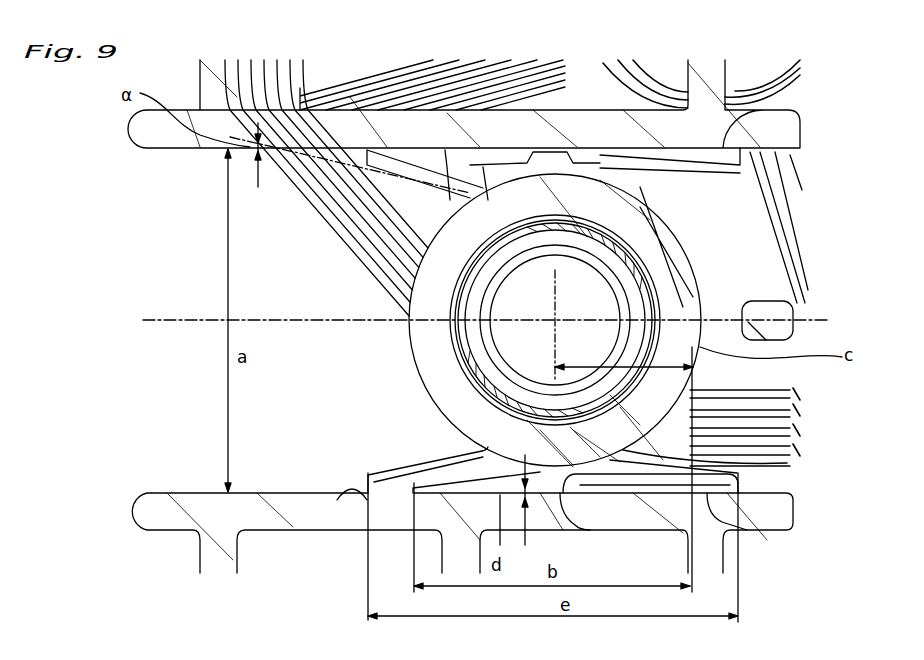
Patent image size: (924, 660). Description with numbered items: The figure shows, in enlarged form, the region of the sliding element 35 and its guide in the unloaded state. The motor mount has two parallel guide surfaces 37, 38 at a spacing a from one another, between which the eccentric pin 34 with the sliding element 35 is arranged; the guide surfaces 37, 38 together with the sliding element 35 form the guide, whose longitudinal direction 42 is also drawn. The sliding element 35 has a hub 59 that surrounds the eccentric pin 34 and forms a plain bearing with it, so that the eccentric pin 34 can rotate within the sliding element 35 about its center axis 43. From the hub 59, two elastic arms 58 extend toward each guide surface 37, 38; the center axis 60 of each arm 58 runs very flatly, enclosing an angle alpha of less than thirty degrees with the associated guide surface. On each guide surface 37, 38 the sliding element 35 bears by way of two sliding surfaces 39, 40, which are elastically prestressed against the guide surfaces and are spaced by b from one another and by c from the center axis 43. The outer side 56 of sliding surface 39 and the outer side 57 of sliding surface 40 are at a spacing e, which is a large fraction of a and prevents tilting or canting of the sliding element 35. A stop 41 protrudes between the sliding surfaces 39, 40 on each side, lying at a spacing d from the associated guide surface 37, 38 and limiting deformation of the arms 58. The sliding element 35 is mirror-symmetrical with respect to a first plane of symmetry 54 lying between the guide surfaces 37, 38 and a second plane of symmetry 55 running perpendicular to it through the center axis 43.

The eccentric pin 34 is at (577, 220).
The sliding element 35 is at (517, 200).
The guide surface 37 is at (167, 148).
The guide surface 38 is at (183, 493).
The sliding surface 39 is at (388, 143).
The sliding surface 40 is at (727, 493).
The stop 41 is at (553, 150).
The longitudinal direction 42 is at (170, 320).
The center axis 43 is at (553, 317).
The first plane of symmetry 54 is at (807, 320).
The second plane of symmetry 55 is at (600, 290).
The outer side 56 is at (337, 500).
The outer side 57 is at (740, 493).
The arm 58 is at (483, 165).
The hub 59 is at (693, 300).
The center axis 60 is at (447, 167).